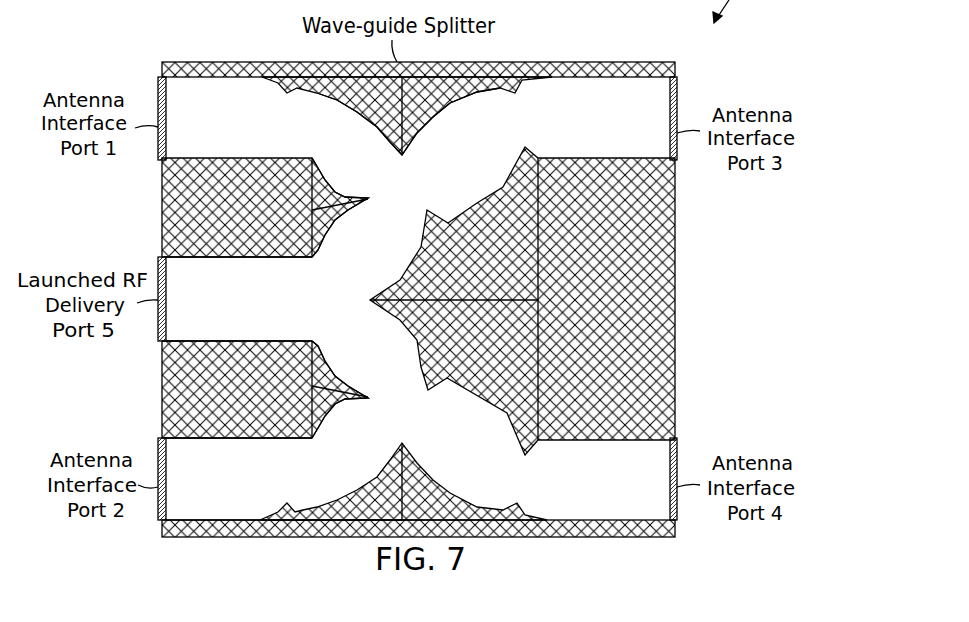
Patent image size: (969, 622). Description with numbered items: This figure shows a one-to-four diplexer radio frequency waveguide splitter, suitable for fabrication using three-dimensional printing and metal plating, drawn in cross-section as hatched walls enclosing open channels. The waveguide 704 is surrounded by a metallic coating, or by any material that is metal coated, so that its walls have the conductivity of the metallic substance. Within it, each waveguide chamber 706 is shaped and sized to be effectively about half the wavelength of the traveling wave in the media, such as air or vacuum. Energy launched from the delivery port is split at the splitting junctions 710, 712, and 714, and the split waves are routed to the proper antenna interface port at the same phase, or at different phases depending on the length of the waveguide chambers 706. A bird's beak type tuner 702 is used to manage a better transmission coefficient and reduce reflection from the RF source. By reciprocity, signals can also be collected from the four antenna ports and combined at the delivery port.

The bird's beak tuner 702 is at (402, 155).
The waveguide 704 is at (198, 318).
The waveguide chamber 706 is at (340, 435).
The splitting junction 710 is at (270, 275).
The splitting junction 712 is at (368, 198).
The splitting junction 714 is at (393, 361).